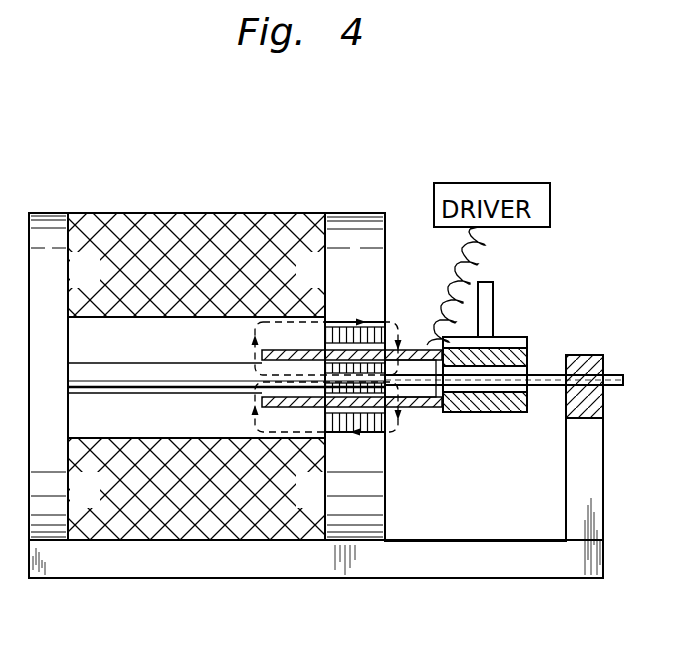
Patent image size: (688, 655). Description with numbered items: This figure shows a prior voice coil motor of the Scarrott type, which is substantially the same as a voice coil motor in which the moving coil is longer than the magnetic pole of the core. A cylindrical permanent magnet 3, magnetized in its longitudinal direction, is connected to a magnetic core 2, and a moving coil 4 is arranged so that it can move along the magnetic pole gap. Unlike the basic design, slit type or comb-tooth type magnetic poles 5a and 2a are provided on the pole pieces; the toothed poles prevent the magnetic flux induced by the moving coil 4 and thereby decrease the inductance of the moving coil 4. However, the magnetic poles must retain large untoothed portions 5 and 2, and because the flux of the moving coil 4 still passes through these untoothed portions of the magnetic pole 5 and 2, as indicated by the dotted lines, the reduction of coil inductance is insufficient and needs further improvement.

The magnetic core 2 is at (127, 369).
The comb-tooth type magnetic pole 2a is at (403, 380).
The cylindrical permanent magnet 3 is at (217, 213).
The moving coil 4 is at (274, 353).
The untoothed portion of magnetic pole 5 is at (363, 222).
The slit type magnetic pole 5a is at (385, 330).